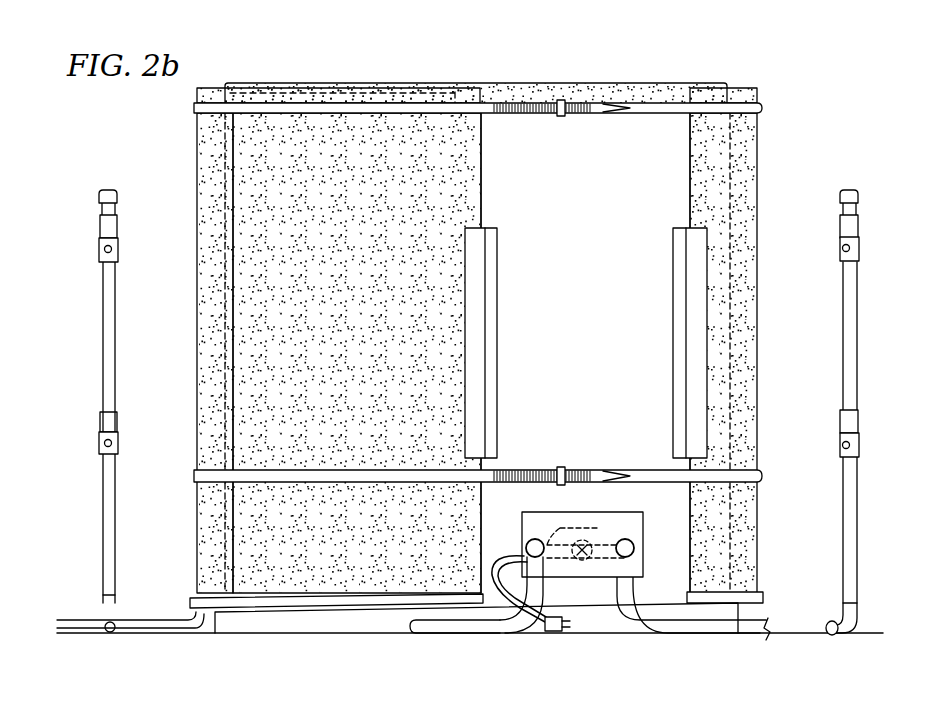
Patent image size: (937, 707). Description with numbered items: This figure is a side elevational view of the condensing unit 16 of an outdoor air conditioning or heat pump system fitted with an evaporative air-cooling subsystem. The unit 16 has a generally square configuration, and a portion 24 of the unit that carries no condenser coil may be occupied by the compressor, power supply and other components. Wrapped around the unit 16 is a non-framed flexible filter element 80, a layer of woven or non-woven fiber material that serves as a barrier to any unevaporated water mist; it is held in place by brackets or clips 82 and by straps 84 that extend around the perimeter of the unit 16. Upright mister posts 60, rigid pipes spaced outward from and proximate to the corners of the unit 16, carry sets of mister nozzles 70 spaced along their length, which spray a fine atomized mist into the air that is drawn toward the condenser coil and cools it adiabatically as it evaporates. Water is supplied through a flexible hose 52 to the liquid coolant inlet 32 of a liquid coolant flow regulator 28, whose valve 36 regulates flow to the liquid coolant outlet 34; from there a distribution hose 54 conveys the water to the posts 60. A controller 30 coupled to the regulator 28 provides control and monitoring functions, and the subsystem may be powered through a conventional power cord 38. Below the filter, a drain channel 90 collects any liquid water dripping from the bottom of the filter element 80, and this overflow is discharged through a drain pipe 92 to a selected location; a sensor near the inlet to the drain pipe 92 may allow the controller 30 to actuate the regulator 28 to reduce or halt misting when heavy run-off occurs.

The condensing unit 16 is at (514, 314).
The portion of the condensing unit without coil 24 is at (575, 306).
The liquid coolant flow regulator 28 is at (586, 536).
The controller 30 is at (643, 552).
The liquid coolant inlet 32 is at (634, 543).
The liquid coolant outlet 34 is at (527, 543).
The valve 36 is at (582, 560).
The power cord 38 is at (546, 634).
The flexible hose 52 is at (712, 628).
The distribution conduit or hose 54 is at (452, 625).
The mister post 60 is at (108, 177).
The mister nozzle 70 is at (840, 246).
The non-framed flexible filter element 80 is at (760, 305).
The brackets or clips 82 is at (497, 360).
The straps 84 is at (663, 115).
The drain channel 90 is at (337, 608).
The drain pipe 92 is at (157, 616).